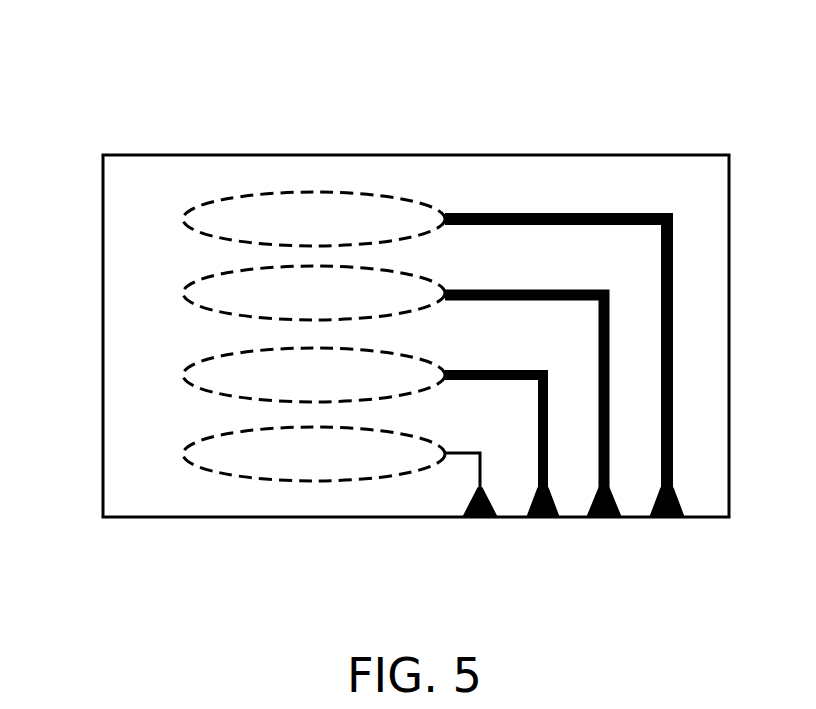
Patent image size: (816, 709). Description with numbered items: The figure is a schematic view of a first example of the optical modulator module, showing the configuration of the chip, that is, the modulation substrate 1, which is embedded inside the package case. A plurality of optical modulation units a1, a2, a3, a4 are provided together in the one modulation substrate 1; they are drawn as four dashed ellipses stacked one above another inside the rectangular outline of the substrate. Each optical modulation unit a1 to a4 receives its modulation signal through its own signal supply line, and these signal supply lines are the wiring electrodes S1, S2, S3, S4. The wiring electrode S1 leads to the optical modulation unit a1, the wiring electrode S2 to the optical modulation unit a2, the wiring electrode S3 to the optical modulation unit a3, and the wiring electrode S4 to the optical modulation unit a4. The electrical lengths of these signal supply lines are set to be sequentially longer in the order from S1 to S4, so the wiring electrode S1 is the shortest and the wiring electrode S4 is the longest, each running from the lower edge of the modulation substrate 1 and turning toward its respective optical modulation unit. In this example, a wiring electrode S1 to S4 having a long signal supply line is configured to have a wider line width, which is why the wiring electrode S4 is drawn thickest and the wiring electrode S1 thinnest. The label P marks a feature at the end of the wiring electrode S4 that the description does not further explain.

The modulation substrate 1 is at (601, 147).
The optical modulation unit a1 is at (183, 454).
The optical modulation unit a2 is at (183, 375).
The optical modulation unit a3 is at (183, 293).
The optical modulation unit a4 is at (183, 219).
The wiring electrode S1 is at (478, 488).
The wiring electrode S2 is at (546, 490).
The wiring electrode S3 is at (610, 483).
The wiring electrode S4 is at (672, 419).
The connection terminal P is at (665, 518).